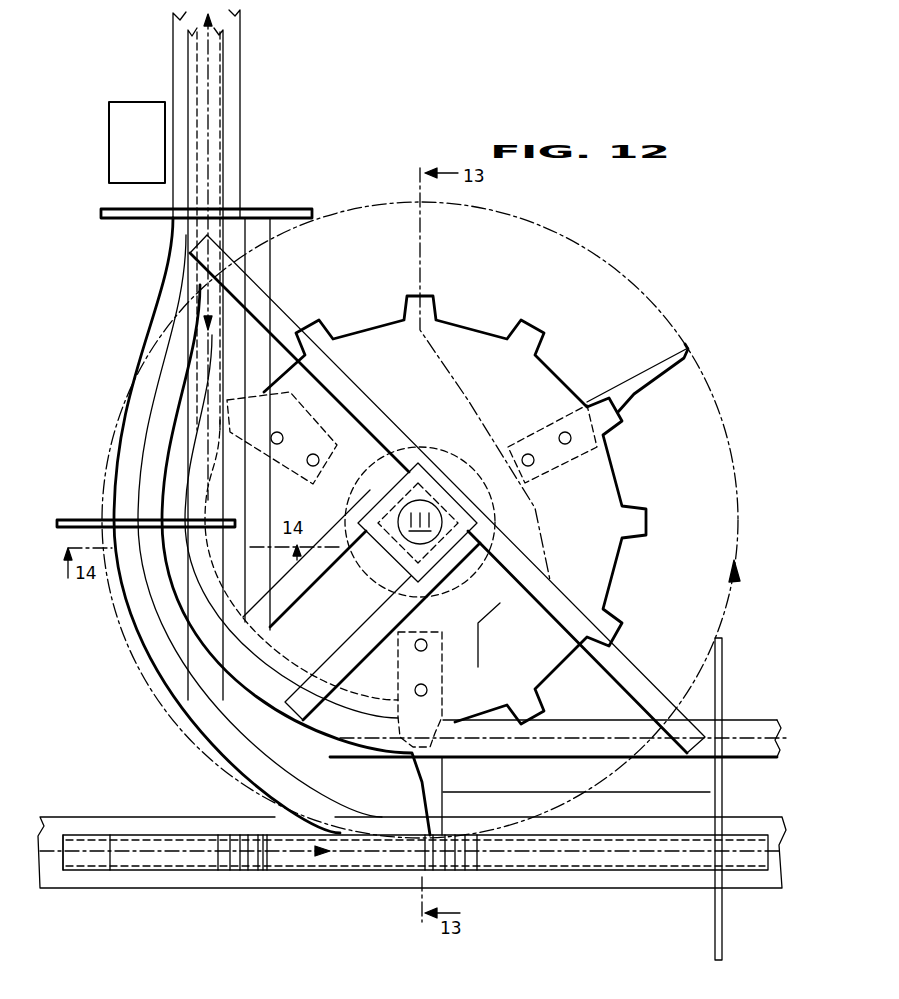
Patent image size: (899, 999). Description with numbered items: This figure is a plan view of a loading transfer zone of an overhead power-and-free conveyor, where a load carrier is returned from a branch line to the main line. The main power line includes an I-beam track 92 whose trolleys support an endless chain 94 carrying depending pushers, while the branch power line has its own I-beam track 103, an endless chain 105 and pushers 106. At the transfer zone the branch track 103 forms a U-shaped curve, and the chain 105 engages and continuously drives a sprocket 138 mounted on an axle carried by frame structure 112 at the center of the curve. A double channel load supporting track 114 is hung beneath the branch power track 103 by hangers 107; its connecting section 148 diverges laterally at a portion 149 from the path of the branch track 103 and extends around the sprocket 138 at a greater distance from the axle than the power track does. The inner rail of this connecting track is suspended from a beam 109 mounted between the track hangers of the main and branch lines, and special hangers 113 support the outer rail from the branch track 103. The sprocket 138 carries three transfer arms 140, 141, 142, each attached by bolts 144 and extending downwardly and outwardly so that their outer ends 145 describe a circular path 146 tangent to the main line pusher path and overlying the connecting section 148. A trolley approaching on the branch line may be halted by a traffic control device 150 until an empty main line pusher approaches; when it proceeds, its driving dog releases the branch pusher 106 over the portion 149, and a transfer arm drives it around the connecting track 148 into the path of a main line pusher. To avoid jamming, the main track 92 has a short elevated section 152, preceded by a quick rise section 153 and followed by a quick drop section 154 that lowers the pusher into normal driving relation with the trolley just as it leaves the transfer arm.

The I-beam track 92 is at (577, 873).
The endless chain 94 is at (128, 870).
The I-beam track 103 is at (226, 58).
The endless chain 105 is at (210, 164).
The pushers 106 is at (224, 560).
The hangers 107 is at (289, 209).
The beam 109 is at (276, 280).
The frame structure 112 is at (497, 527).
The hangers 113 is at (88, 520).
The load supporting track 114 is at (248, 88).
The sprocket 138 is at (546, 380).
The transfer arm 140 is at (150, 398).
The transfer arm 141 is at (446, 779).
The transfer arm 142 is at (658, 357).
The bolts 144 is at (565, 438).
The outer ends 145 is at (686, 346).
The circular path 146 is at (729, 444).
The connecting section 148 is at (153, 637).
The connecting track portion 149 is at (166, 268).
The traffic control device 150 is at (109, 144).
The elevated track section 152 is at (412, 865).
The quick rise section 153 is at (245, 871).
The quick drop section 154 is at (455, 871).